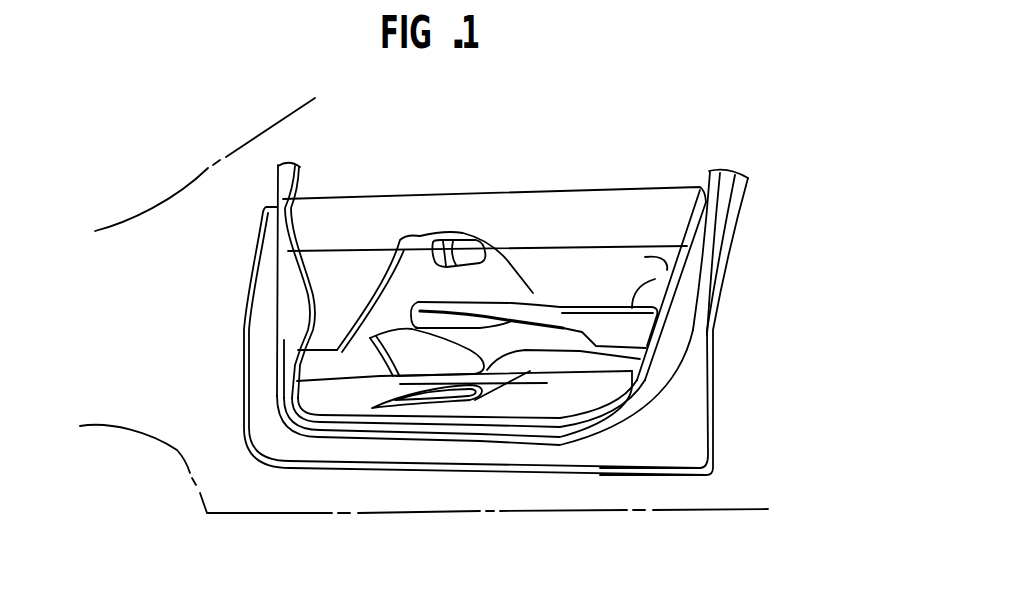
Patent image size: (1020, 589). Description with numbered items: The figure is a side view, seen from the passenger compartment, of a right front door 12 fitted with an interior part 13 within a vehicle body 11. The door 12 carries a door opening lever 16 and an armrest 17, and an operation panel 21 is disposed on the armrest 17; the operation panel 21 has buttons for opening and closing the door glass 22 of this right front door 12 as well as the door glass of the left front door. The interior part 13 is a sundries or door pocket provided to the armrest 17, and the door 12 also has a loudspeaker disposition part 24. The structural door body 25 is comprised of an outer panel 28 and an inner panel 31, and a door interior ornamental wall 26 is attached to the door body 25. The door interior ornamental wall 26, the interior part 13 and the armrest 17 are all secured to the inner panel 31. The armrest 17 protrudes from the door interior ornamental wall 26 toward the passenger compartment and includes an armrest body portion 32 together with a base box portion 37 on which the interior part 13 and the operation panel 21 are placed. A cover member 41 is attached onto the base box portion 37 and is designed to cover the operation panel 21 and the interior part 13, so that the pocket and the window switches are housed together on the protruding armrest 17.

The vehicle body 11 is at (190, 176).
The door 12 is at (420, 170).
The interior part 13 is at (533, 296).
The door opening lever 16 is at (468, 252).
The armrest 17 is at (603, 296).
The operation panel 21 is at (437, 300).
The door glass 22 is at (670, 161).
The loudspeaker disposition part 24 is at (320, 407).
The door body 25 is at (240, 319).
The door interior ornamental wall 26 is at (548, 411).
The outer panel 28 is at (710, 360).
The inner panel 31 is at (680, 432).
The armrest body portion 32 is at (655, 279).
The base box portion 37 is at (533, 342).
The cover member 41 is at (497, 302).